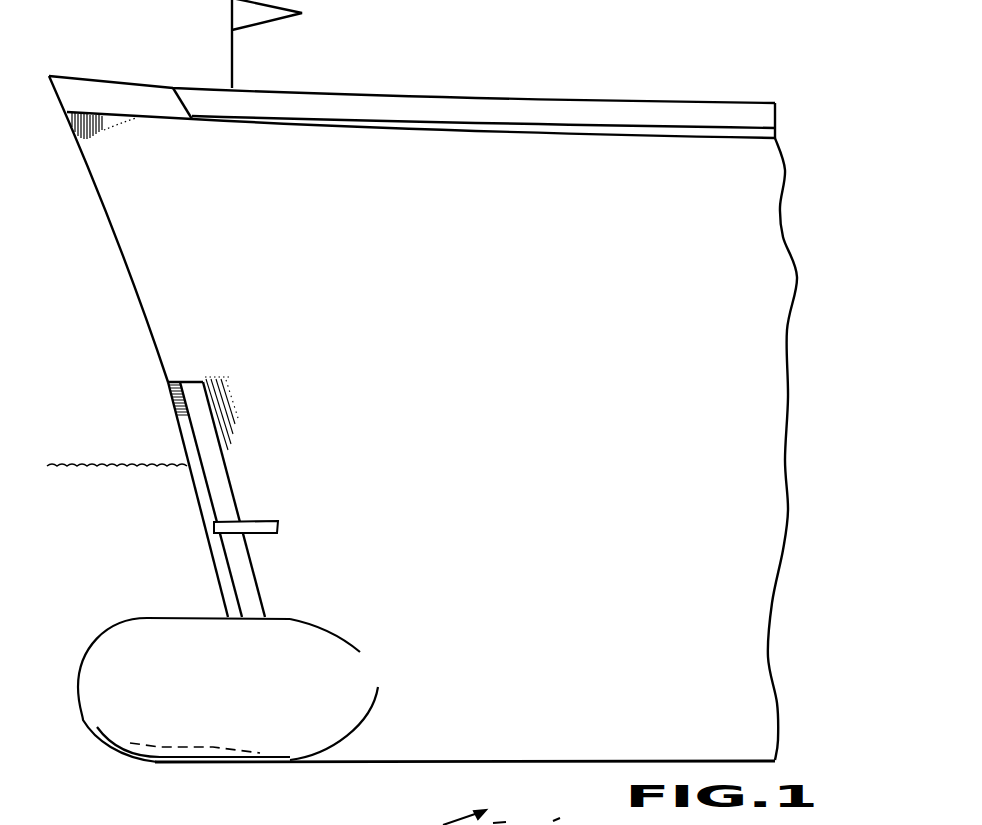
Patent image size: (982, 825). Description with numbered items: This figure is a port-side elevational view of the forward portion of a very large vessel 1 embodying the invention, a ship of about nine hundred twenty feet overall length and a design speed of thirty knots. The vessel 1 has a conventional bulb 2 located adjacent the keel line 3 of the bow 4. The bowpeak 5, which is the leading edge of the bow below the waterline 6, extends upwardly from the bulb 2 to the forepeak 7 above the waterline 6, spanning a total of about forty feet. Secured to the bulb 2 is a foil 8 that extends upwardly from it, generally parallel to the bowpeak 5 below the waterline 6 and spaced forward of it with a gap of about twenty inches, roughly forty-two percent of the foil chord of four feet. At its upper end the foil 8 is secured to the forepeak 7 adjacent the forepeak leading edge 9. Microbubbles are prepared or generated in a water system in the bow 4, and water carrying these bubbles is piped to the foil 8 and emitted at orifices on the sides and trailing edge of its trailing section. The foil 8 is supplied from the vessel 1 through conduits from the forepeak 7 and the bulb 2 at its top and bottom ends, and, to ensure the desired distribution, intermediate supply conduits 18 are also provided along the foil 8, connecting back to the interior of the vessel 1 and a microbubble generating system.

The vessel 1 is at (543, 422).
The bulb 2 is at (83, 720).
The keel line 3 is at (337, 763).
The bow 4 is at (265, 425).
The bowpeak 5 is at (215, 437).
The waterline 6 is at (80, 463).
The forepeak 7 is at (128, 268).
The foil 8 is at (173, 408).
The forepeak leading edge 9 is at (161, 373).
The intermediate supply conduits 18 is at (273, 521).